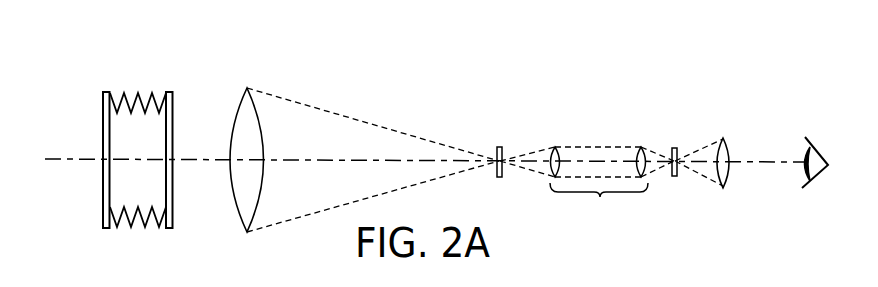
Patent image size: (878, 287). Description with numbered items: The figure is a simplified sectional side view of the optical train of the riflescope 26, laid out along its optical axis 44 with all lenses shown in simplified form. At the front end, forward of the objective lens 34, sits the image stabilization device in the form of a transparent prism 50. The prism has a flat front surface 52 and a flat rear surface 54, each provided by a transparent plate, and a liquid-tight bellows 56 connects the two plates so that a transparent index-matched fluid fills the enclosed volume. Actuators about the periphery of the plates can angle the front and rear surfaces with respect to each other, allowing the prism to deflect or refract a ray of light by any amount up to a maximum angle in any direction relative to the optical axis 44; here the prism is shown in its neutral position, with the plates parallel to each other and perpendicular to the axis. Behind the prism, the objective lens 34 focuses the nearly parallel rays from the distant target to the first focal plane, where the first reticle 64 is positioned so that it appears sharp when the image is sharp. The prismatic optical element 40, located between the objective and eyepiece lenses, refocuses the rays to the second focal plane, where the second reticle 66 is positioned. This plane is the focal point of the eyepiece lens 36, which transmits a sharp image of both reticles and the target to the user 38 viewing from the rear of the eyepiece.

The riflescope 26 is at (537, 90).
The objective lens 34 is at (258, 122).
The eyepiece lens 36 is at (728, 145).
The user 38 is at (822, 140).
The prismatic optical element 40 is at (599, 190).
The optical axis 44 is at (317, 160).
The transparent prism 50 is at (134, 153).
The front surface 52 is at (102, 145).
The rear surface 54 is at (172, 148).
The bellows 56 is at (130, 217).
The first reticle 64 is at (499, 147).
The second reticle 66 is at (675, 148).